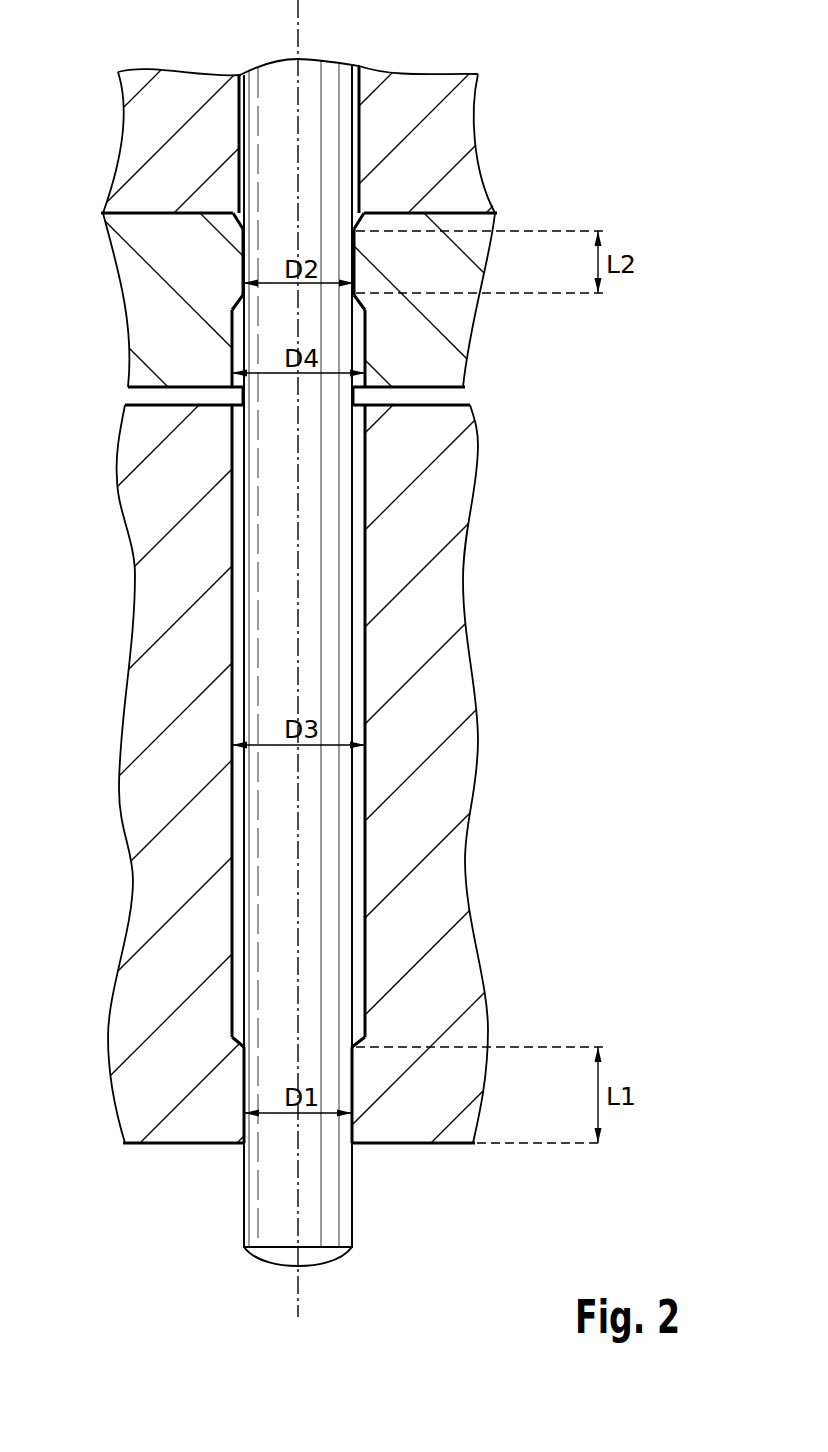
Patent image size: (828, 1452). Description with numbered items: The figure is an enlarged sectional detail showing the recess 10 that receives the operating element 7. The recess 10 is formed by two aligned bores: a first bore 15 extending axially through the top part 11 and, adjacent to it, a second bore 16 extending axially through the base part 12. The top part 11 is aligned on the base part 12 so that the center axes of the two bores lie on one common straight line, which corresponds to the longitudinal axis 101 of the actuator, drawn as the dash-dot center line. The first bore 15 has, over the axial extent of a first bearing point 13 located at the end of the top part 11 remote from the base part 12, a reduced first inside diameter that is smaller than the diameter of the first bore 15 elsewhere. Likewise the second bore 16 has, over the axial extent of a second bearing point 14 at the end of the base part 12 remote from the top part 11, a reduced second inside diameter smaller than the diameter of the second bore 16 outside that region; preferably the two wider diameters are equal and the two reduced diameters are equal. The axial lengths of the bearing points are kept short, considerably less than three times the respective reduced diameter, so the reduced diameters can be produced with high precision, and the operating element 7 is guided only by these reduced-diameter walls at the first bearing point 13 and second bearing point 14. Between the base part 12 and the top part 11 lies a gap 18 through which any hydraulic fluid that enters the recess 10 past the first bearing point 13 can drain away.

The operating element 7 is at (333, 615).
The recess 10 is at (367, 658).
The top part 11 is at (460, 753).
The base part 12 is at (160, 325).
The first bearing point 13 is at (369, 1099).
The second bearing point 14 is at (366, 265).
The first bore 15 is at (367, 838).
The second bore 16 is at (367, 363).
The gap 18 is at (462, 398).
The longitudinal axis 101 is at (298, 10).